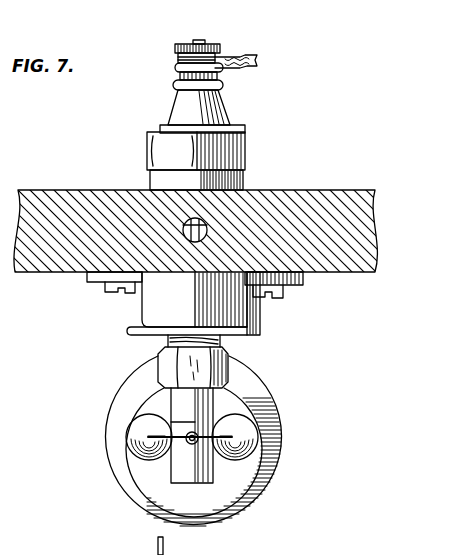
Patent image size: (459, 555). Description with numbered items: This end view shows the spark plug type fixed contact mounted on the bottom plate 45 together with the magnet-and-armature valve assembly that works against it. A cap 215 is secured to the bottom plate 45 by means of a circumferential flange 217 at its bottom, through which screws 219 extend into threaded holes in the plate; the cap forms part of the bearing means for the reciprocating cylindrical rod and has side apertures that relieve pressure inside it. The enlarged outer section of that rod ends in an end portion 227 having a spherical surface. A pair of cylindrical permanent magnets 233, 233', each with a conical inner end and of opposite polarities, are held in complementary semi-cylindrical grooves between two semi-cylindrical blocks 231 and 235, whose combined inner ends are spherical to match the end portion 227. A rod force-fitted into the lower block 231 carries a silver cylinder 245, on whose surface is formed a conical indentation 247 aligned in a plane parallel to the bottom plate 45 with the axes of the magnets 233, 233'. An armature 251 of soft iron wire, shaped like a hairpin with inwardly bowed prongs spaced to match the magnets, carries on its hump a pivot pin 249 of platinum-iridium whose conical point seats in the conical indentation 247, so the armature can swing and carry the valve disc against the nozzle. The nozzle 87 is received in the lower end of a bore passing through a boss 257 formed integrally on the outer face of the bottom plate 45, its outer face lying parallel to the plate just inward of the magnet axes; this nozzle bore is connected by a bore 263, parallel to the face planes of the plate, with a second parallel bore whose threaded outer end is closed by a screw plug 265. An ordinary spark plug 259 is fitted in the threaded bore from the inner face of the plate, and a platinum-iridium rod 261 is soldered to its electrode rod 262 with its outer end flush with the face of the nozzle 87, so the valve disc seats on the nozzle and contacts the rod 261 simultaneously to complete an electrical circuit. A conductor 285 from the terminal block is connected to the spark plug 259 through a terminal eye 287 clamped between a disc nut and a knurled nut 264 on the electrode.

The bottom plate 45 is at (43, 247).
The nozzle 87 is at (219, 361).
The cap 215 is at (133, 333).
The circumferential flange 217 is at (305, 286).
The screws 219 is at (105, 291).
The end portion 227 is at (266, 395).
The semi-cylindrical block 231 is at (203, 492).
The cylindrical permanent magnet 233 is at (112, 437).
The cylindrical permanent magnet 233' is at (280, 437).
The semi-cylindrical block 235 is at (152, 400).
The silver cylinder 245 is at (234, 498).
The conical indentation 247 is at (196, 442).
The pivot pin 249 is at (188, 442).
The armature 251 is at (160, 439).
The boss 257 is at (152, 305).
The spark plug 259 is at (190, 98).
The platinum-iridium rod 261 is at (183, 224).
The electrode rod 262 is at (199, 40).
The bore 263 is at (206, 224).
The knurled nut 264 is at (221, 48).
The screw plug 265 is at (18, 547).
The conductor 285 is at (253, 61).
The terminal eye 287 is at (224, 67).